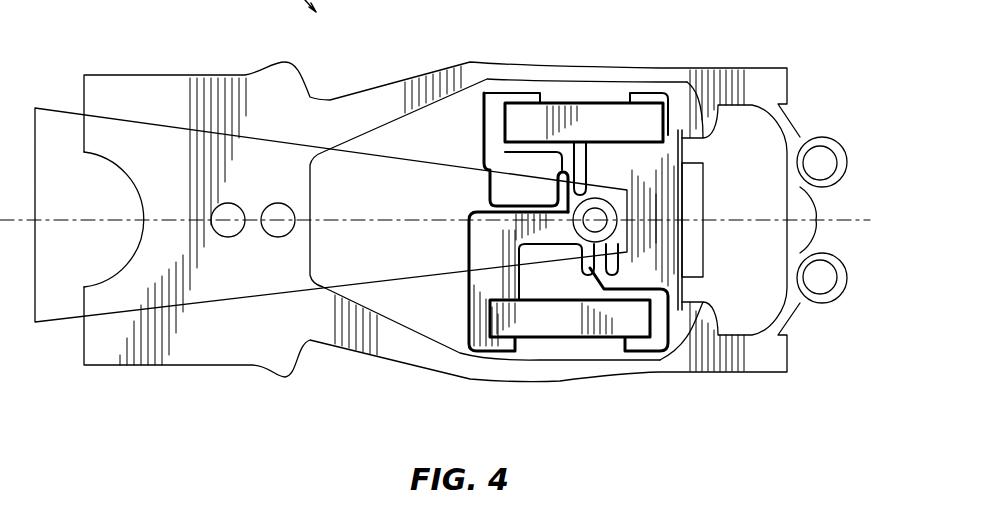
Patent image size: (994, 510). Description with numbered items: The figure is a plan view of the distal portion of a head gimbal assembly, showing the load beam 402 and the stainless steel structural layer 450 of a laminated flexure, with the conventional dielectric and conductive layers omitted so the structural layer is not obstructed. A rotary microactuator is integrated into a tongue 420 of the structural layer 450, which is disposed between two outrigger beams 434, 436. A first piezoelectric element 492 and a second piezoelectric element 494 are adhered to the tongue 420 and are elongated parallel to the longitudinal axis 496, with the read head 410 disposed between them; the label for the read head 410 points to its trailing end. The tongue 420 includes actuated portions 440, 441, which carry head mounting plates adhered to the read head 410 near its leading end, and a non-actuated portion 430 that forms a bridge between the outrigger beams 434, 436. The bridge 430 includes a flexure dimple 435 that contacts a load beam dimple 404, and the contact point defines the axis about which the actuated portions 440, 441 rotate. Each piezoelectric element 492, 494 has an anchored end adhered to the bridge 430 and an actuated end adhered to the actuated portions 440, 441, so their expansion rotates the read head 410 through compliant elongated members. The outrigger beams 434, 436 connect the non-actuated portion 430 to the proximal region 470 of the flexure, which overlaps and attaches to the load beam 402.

The proximal region of the laminated flexure 470 is at (262, 330).
The structural layer 450 is at (777, 82).
The outrigger beam 436 is at (453, 65).
The outrigger beam 434 is at (498, 379).
The tongue 420 is at (620, 165).
The non-actuated portion 430 is at (660, 234).
The read head 410 is at (693, 182).
The flexure dimple 435 is at (657, 213).
The second piezoelectric element 494 is at (655, 134).
The first piezoelectric element 492 is at (571, 330).
The actuated portion 441 is at (522, 182).
The actuated portion 440 is at (477, 268).
The load beam dimple 404 is at (520, 231).
The longitudinal axis 496 is at (20, 228).
The load beam 402 is at (57, 305).